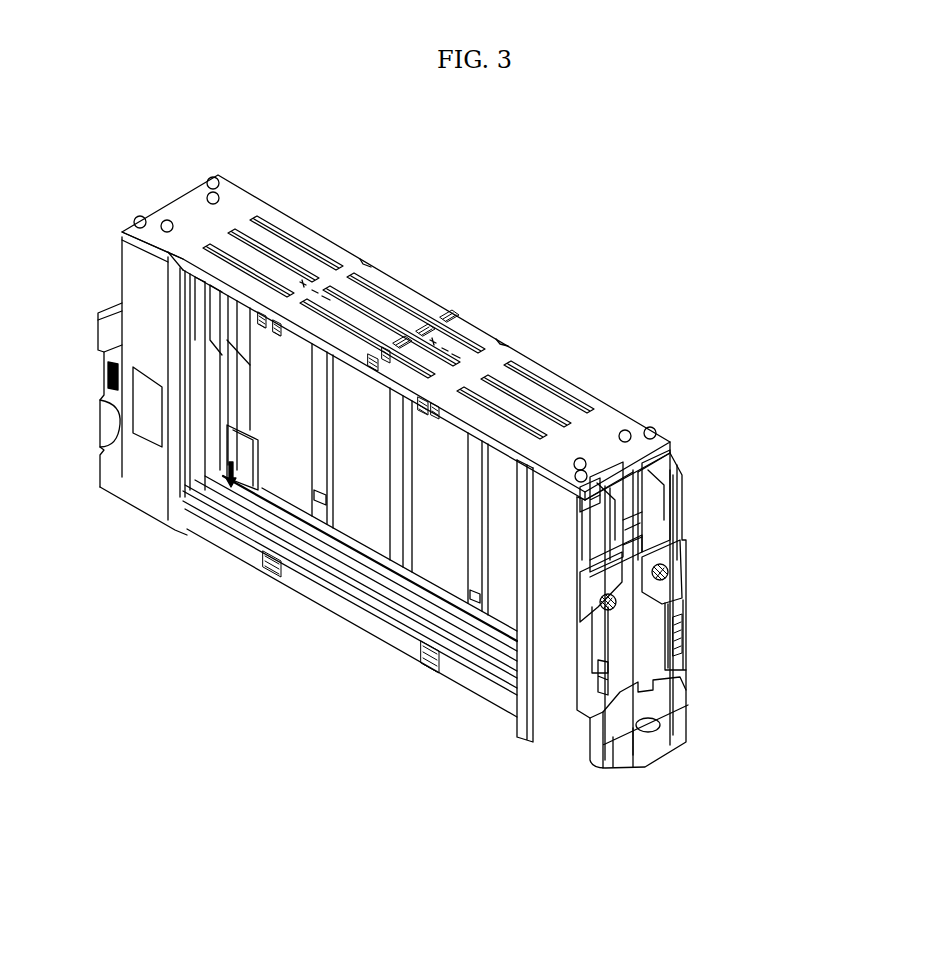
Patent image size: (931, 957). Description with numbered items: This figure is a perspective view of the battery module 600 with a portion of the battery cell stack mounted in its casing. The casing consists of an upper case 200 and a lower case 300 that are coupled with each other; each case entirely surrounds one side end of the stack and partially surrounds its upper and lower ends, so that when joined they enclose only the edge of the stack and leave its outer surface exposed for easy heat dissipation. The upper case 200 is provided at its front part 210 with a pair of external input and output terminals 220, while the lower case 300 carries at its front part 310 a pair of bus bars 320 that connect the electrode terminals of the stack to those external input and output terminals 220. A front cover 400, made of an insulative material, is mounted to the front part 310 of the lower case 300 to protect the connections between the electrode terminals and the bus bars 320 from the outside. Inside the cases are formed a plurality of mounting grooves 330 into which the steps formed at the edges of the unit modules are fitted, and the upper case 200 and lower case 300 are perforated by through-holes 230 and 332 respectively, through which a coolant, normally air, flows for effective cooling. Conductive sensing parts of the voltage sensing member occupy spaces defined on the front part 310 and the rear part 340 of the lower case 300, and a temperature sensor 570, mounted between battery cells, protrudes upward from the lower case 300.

The battery module assembly 600 is at (94, 161).
The upper case 200 is at (544, 353).
The through-holes 230 is at (307, 250).
The external input and output terminals 220 is at (667, 490).
The bus bars 320 is at (650, 511).
The front cover 400 is at (680, 610).
The front part 310 is at (553, 703).
The rear part 340 is at (137, 478).
The temperature sensor 570 is at (230, 484).
The mounting grooves 330 is at (250, 527).
The through-holes 332 is at (337, 527).
The lower case 300 is at (331, 622).
The front part 210 is at (570, 543).